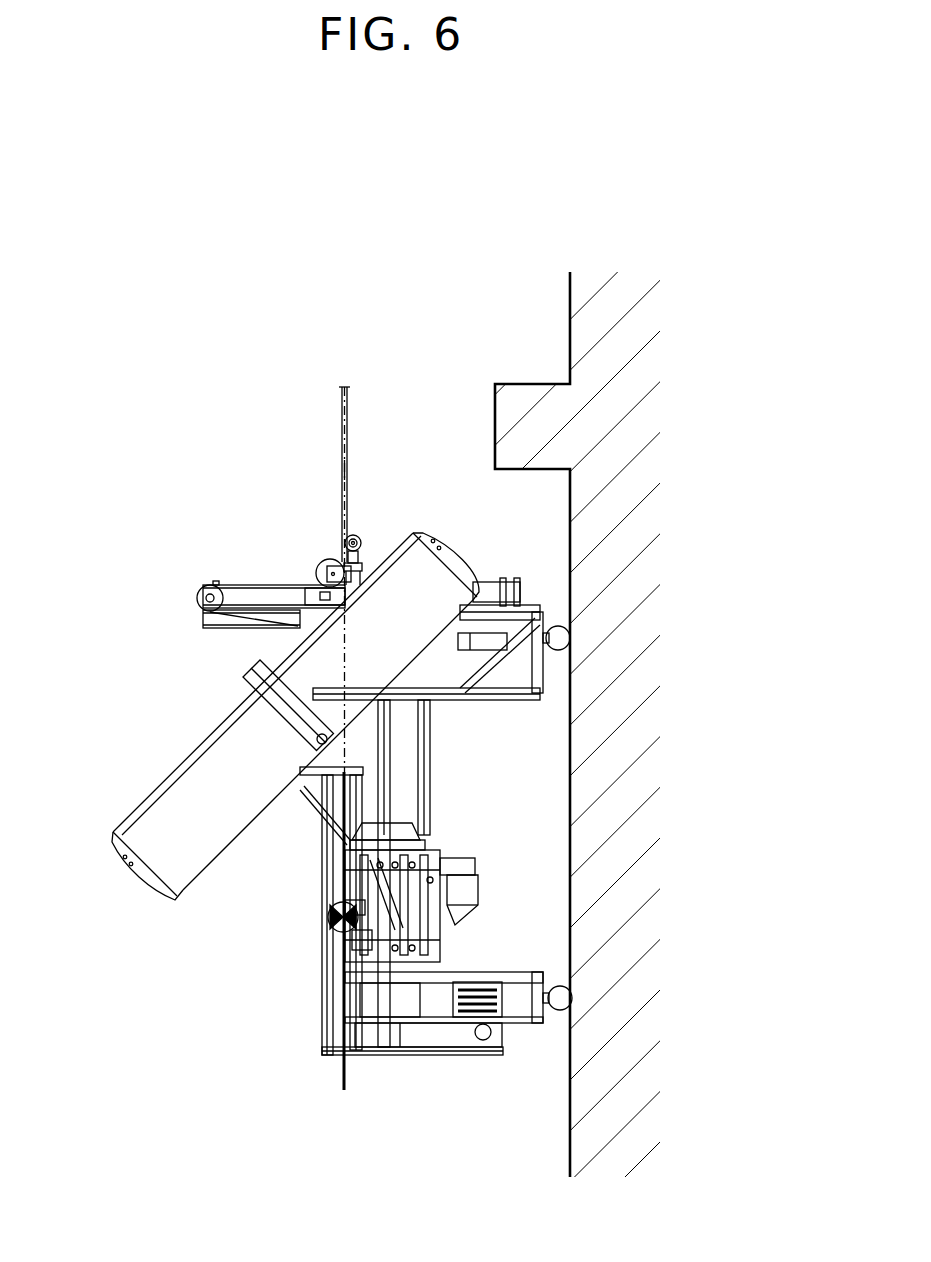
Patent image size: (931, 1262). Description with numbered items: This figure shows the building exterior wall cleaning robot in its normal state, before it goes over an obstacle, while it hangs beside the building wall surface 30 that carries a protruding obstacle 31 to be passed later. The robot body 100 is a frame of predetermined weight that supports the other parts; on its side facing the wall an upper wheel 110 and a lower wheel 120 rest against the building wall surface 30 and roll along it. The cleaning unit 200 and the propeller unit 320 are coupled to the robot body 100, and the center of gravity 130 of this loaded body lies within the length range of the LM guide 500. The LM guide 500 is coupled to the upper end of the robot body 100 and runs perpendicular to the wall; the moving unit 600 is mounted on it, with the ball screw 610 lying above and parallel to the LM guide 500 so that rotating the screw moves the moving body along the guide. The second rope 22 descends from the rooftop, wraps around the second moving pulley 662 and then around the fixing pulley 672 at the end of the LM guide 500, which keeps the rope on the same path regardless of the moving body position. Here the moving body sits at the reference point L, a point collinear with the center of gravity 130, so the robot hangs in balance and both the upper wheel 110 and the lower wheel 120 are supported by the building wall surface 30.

The building wall surface 30 is at (570, 305).
The obstacle 31 is at (495, 425).
The second rope 22 is at (342, 427).
The reference point L is at (342, 470).
The moving unit 600 is at (372, 555).
The ball screw 610 is at (262, 586).
The second moving pulley 662 is at (326, 560).
The fixing pulley 672 is at (198, 598).
The LM guide 500 is at (240, 630).
The propeller unit 320 is at (135, 870).
The robot body 100 is at (306, 966).
The upper wheel 110 is at (556, 625).
The lower wheel 120 is at (560, 1012).
The center of gravity 130 is at (328, 915).
The cleaning unit 200 is at (482, 846).